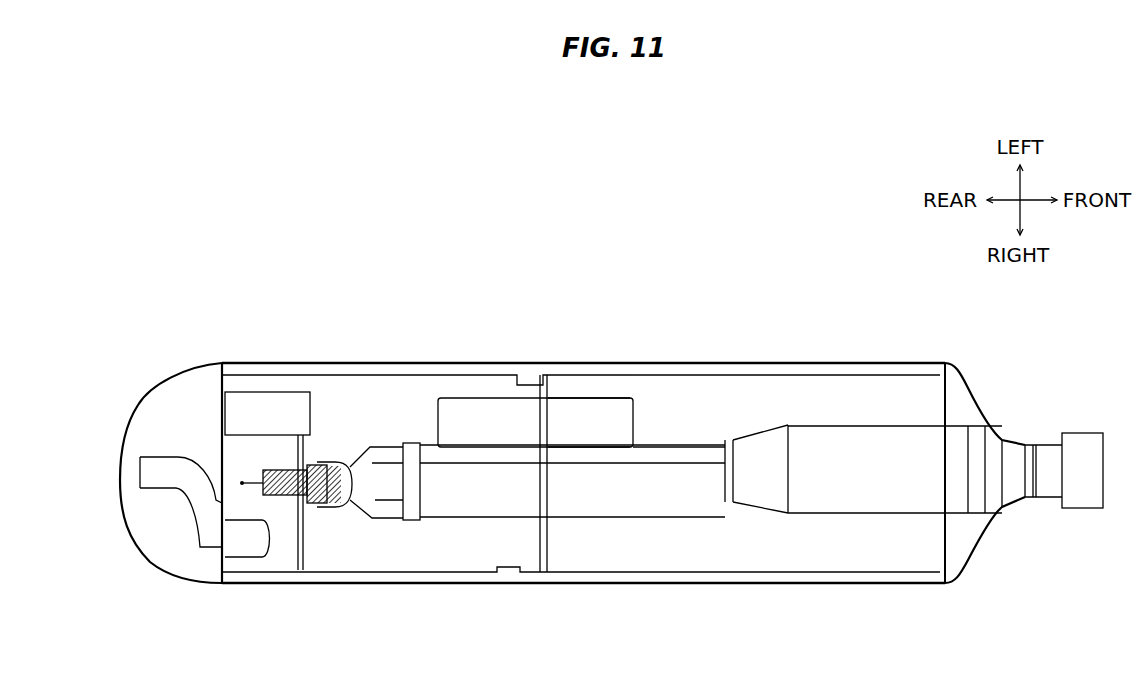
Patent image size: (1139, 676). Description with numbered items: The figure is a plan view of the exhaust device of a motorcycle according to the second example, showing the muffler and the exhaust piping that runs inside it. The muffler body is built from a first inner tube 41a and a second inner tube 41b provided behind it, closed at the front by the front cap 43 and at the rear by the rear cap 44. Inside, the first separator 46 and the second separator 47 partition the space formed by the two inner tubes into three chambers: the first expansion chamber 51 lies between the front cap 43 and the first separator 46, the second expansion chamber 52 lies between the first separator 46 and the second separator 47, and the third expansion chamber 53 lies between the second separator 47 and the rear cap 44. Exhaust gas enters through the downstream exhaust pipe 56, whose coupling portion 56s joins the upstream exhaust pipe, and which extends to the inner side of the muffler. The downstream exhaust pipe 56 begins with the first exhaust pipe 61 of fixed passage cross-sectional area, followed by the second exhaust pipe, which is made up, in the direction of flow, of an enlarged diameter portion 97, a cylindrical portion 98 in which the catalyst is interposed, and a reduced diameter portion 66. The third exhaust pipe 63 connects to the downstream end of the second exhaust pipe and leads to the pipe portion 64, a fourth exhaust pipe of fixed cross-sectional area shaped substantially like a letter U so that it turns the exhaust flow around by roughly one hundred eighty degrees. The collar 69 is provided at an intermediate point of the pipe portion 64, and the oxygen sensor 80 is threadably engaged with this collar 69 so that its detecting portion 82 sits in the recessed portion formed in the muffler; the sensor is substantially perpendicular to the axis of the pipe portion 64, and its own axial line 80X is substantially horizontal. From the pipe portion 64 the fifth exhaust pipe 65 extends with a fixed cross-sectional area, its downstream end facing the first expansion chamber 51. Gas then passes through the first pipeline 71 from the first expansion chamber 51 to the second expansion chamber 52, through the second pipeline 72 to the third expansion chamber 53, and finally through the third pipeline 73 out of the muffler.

The first inner tube 41a is at (714, 366).
The second inner tube 41b is at (373, 362).
The front cap 43 is at (970, 391).
The rear cap 44 is at (185, 390).
The first separator 46 is at (553, 388).
The second separator 47 is at (305, 455).
The first expansion chamber 51 is at (813, 408).
The second expansion chamber 52 is at (435, 388).
The third expansion chamber 53 is at (235, 378).
The downstream exhaust pipe 56 is at (1040, 490).
The coupling portion 56s is at (1086, 498).
The first exhaust pipe 61 is at (1043, 488).
The third exhaust pipe 63 is at (667, 446).
The pipe portion 64 is at (372, 508).
The fifth exhaust pipe 65 is at (603, 518).
The reduced diameter portion 66 is at (760, 505).
The collar 69 is at (327, 500).
The first pipeline 71 is at (606, 397).
The second pipeline 72 is at (287, 385).
The third pipeline 73 is at (196, 540).
The oxygen sensor 80 is at (313, 497).
The axial line 80X is at (242, 483).
The detecting portion 82 is at (342, 502).
The enlarged diameter portion 97 is at (982, 515).
The cylindrical portion 98 is at (860, 514).